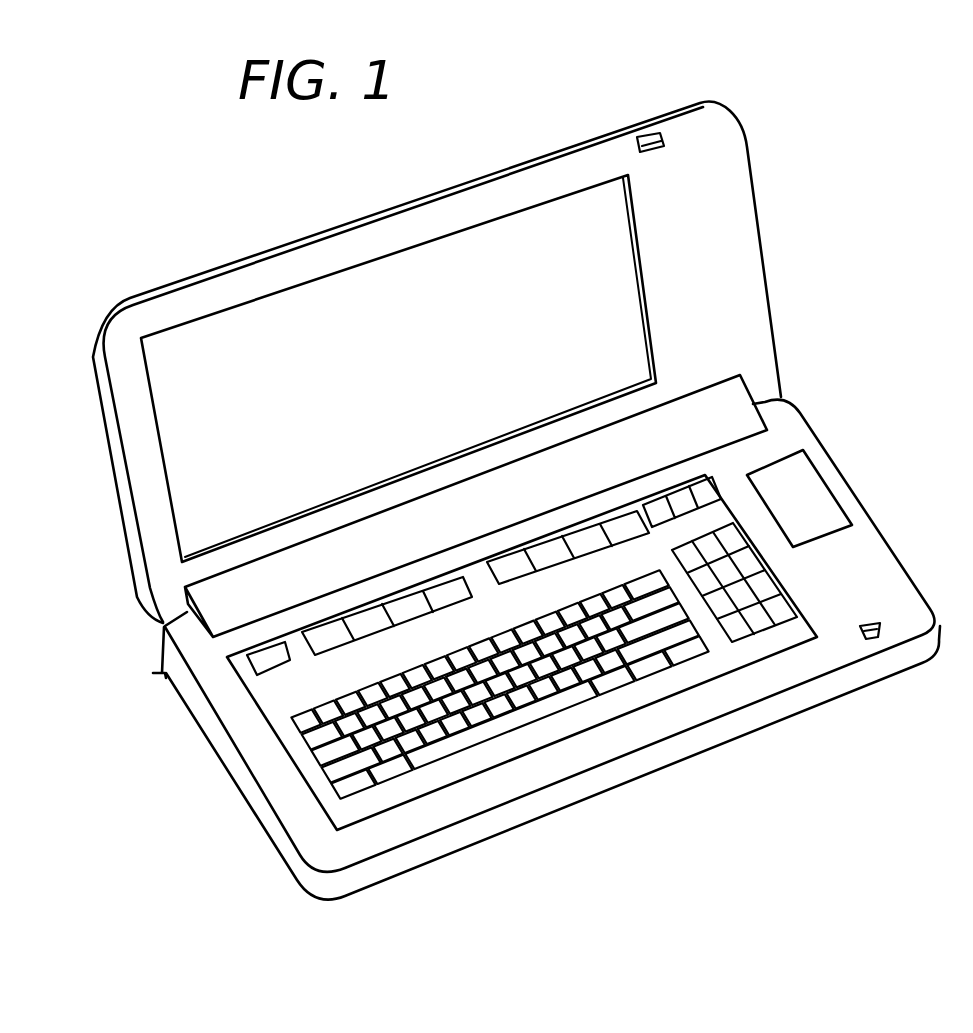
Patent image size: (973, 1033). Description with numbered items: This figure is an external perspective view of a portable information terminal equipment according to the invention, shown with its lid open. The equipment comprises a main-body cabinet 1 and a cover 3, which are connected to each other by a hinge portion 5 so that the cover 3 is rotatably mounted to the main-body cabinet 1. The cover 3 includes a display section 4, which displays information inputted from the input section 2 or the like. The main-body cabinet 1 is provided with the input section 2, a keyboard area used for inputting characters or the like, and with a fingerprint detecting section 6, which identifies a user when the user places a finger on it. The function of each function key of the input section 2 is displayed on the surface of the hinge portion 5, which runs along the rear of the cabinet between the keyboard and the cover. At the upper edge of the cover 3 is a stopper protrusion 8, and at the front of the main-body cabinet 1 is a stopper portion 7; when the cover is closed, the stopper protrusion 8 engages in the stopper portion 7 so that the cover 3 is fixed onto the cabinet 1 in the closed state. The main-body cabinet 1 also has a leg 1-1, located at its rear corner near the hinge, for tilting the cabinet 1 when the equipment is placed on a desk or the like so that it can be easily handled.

The main-body cabinet 1 is at (245, 718).
The leg 1-1 is at (158, 673).
The input section 2 is at (423, 783).
The cover 3 is at (741, 203).
The display section 4 is at (398, 368).
The hinge portion 5 is at (476, 506).
The fingerprint detecting section 6 is at (799, 498).
The stopper portion 7 is at (880, 628).
The stopper protrusion 8 is at (648, 132).